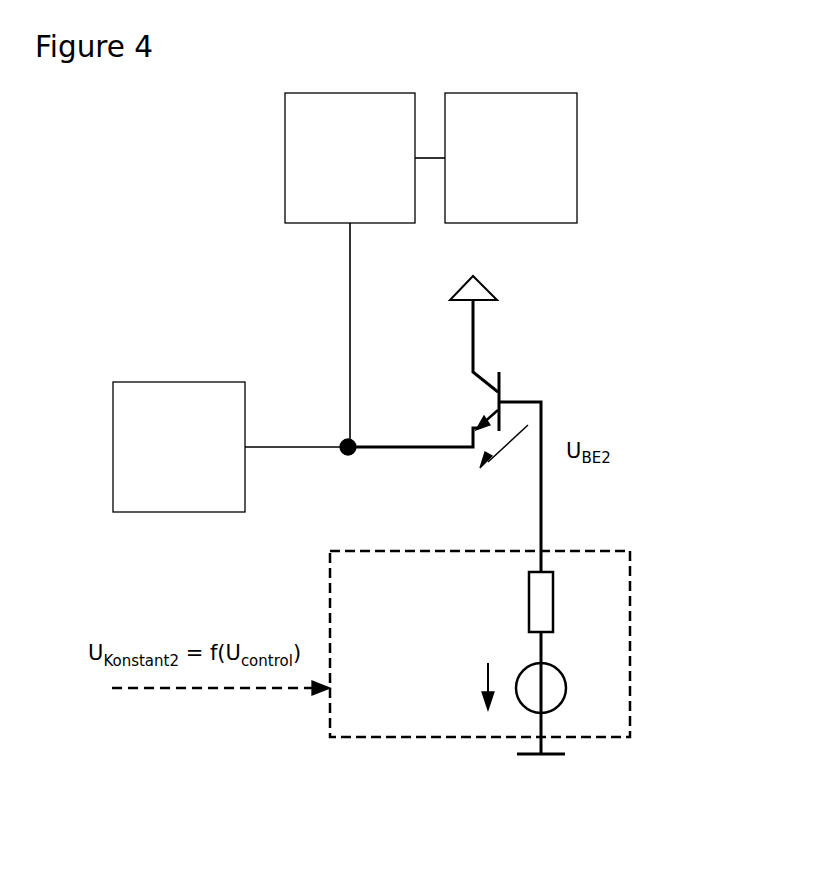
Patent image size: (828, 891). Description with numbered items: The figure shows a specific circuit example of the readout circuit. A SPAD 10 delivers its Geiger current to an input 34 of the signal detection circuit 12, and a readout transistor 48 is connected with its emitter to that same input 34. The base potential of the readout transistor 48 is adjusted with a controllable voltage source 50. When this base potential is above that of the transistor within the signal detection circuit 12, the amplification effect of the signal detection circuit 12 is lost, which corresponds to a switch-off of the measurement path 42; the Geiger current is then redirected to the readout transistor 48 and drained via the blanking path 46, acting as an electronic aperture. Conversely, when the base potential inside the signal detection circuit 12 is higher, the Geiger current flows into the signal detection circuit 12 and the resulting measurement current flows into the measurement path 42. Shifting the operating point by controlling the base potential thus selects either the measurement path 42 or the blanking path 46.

The SPAD (single photon avalanche diode) 10 is at (148, 403).
The signal detection circuit 12 is at (300, 138).
The input of the signal detection circuit 34 is at (353, 456).
The measurement path 42 is at (548, 122).
The blanking path 46 is at (528, 320).
The readout transistor 48 is at (465, 400).
The controllable voltage source 50 is at (627, 610).